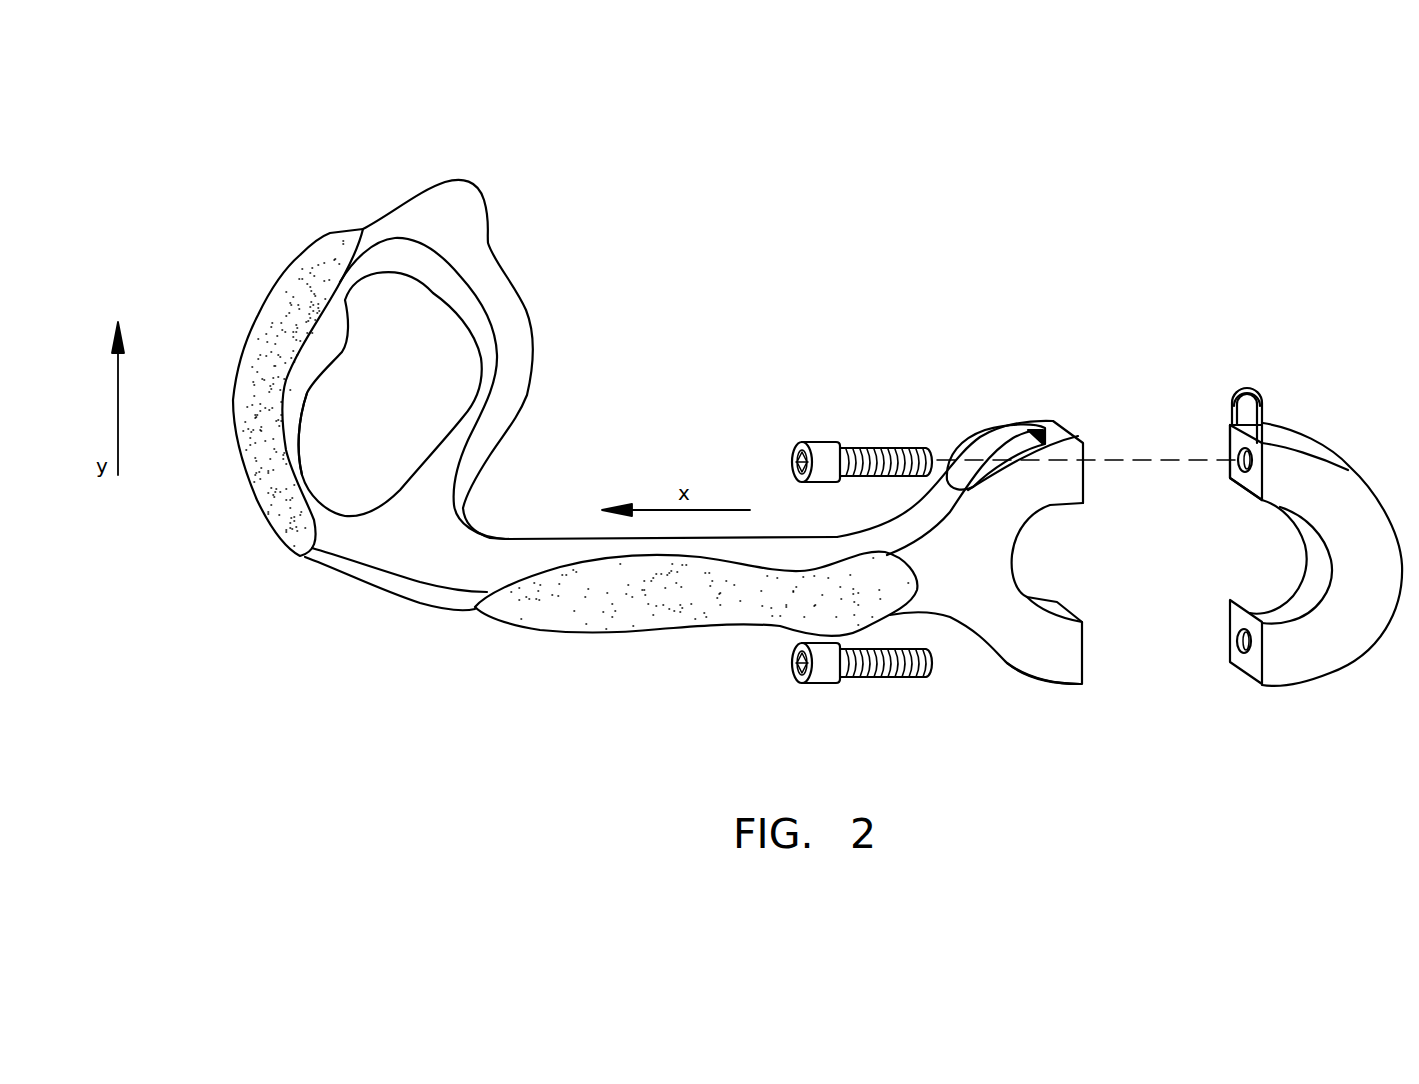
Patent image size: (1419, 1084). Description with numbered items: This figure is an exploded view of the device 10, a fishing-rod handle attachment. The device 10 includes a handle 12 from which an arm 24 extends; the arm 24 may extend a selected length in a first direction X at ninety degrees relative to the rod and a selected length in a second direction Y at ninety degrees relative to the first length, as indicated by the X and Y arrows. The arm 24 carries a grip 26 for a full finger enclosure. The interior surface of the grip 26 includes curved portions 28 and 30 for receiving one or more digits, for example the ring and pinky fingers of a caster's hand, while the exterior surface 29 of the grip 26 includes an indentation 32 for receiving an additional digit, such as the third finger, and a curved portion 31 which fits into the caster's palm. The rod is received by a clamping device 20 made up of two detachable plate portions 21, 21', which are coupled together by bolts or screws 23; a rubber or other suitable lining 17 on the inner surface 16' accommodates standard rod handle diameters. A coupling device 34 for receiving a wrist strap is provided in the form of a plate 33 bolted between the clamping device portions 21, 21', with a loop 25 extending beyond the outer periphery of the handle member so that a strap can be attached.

The device 10 is at (748, 306).
The handle 12 is at (642, 655).
The inner surface 16' is at (1228, 555).
The lining 17 is at (1297, 587).
The clamping device 20 is at (1203, 722).
The clamping device portion 21 is at (1074, 700).
The clamping device portion 21' is at (1332, 583).
The screws 23 is at (818, 442).
The arm 24 is at (508, 553).
The loop 25 is at (1233, 390).
The grip 26 is at (262, 540).
The curved portion 28 is at (312, 457).
The exterior surface 29 is at (497, 427).
The curved portion 30 is at (357, 307).
The curved portion 31 is at (410, 605).
The indentation 32 is at (490, 243).
The plate 33 is at (1230, 447).
The coupling device 34 is at (1247, 387).